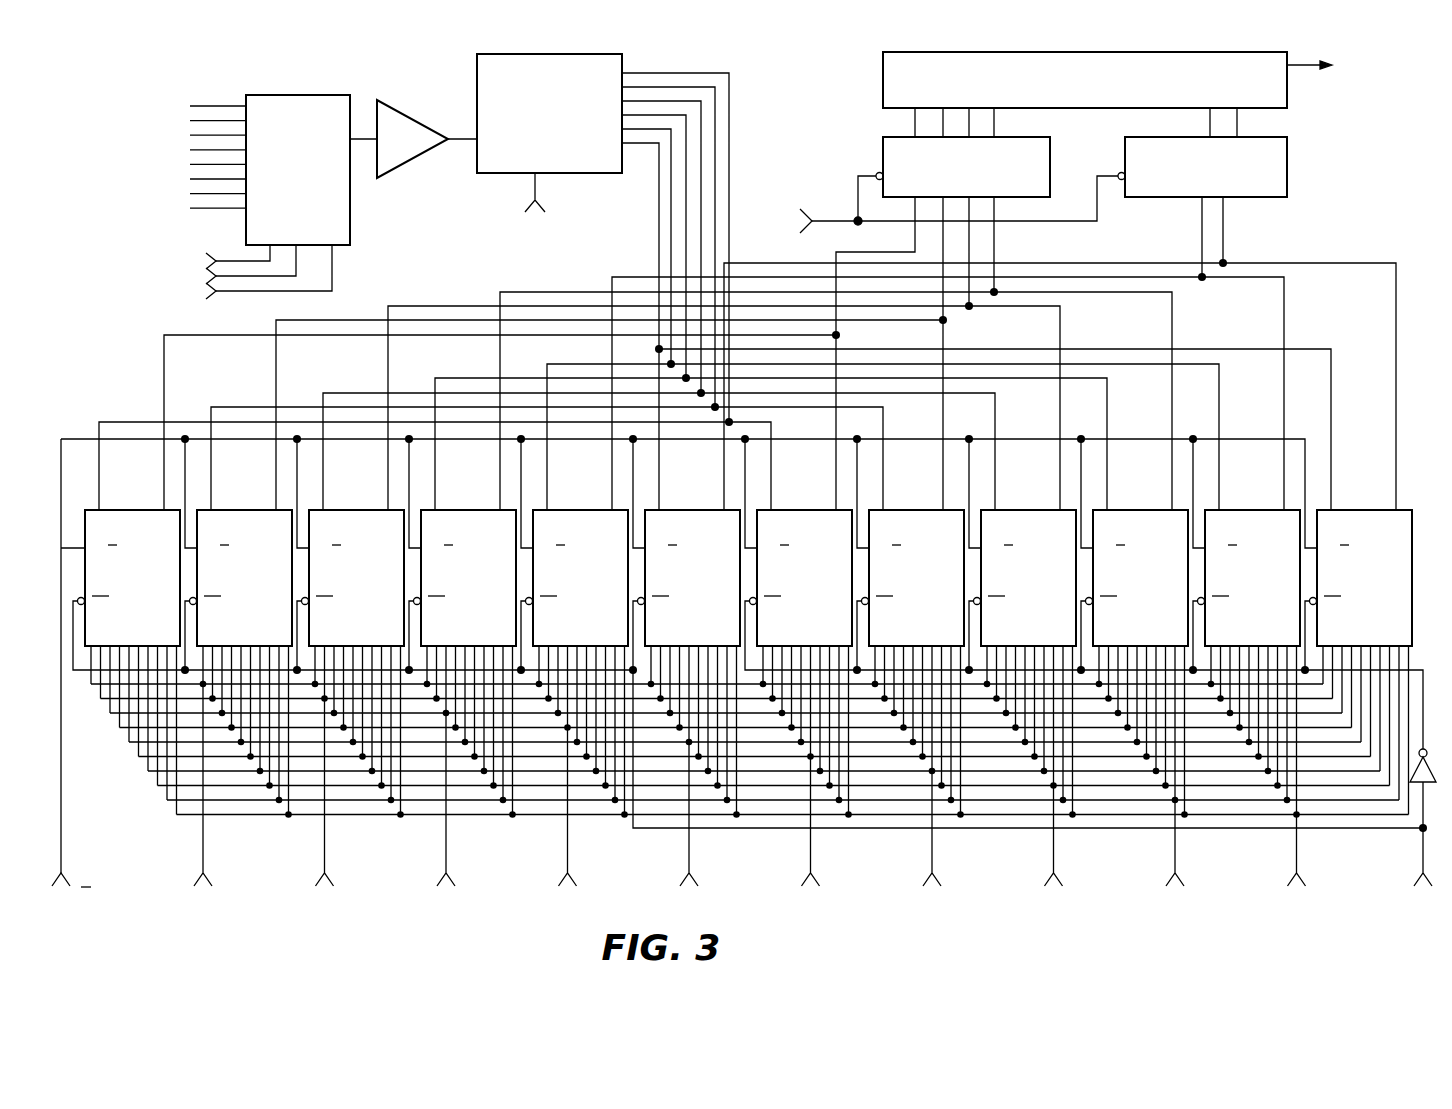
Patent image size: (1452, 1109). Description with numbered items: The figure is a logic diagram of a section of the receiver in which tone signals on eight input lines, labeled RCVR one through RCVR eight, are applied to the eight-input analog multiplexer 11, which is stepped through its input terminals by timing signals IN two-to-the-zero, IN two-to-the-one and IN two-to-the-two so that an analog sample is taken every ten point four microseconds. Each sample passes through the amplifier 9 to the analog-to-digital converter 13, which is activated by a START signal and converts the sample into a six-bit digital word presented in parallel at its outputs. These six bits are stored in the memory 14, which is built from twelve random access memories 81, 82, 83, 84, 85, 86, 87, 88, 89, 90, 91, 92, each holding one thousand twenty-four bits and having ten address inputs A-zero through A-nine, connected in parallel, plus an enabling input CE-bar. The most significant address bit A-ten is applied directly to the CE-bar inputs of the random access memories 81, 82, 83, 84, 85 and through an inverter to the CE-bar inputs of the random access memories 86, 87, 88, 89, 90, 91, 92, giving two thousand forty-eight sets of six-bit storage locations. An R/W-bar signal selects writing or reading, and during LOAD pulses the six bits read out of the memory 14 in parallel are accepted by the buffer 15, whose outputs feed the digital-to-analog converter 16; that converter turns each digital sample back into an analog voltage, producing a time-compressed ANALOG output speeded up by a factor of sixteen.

The amplifier 9 is at (399, 112).
The analog multiplexer 11 is at (303, 95).
The analog-to-digital converter 13 is at (622, 66).
The memory 14 is at (434, 300).
The buffer 15 is at (1125, 152).
The digital-to-analog converter 16 is at (883, 62).
The random access memory 81 is at (134, 510).
The random access memory 82 is at (246, 510).
The random access memory 83 is at (358, 510).
The random access memory 84 is at (470, 510).
The random access memory 85 is at (582, 510).
The random access memory 86 is at (694, 510).
The random access memory 87 is at (806, 510).
The random access memory 88 is at (918, 510).
The random access memory 89 is at (1030, 510).
The random access memory 90 is at (1142, 510).
The random access memory 91 is at (1254, 510).
The random access memory 92 is at (1366, 510).